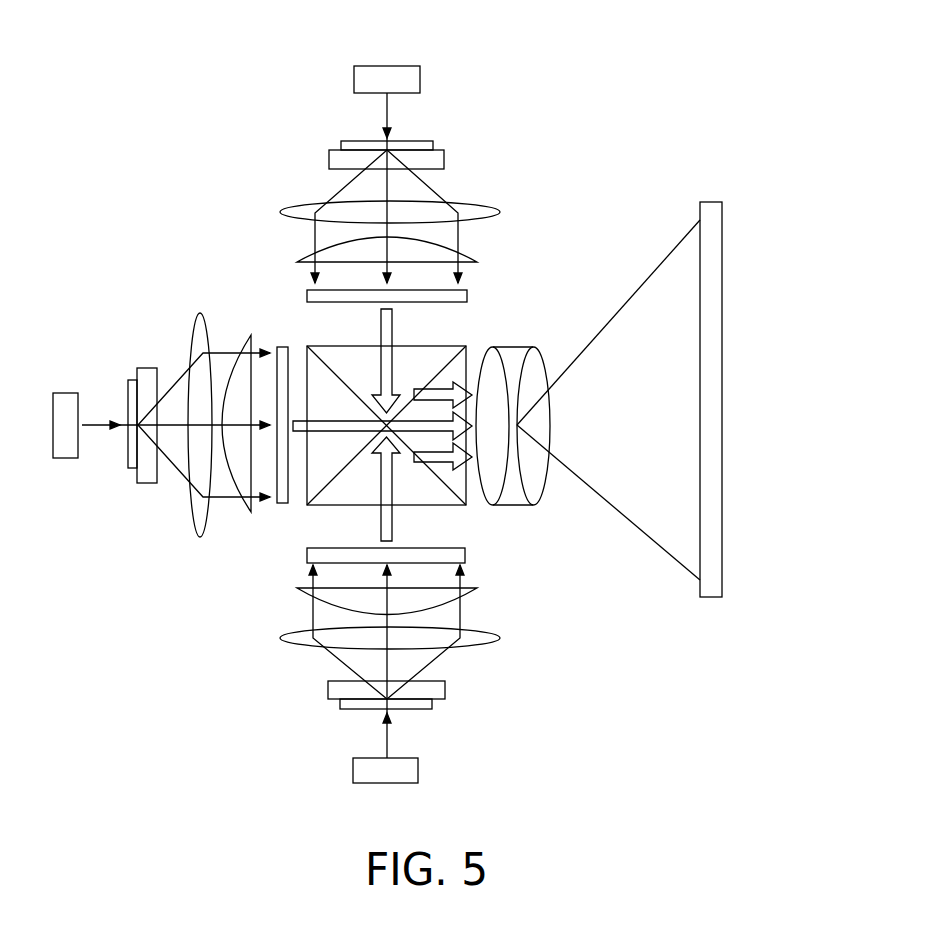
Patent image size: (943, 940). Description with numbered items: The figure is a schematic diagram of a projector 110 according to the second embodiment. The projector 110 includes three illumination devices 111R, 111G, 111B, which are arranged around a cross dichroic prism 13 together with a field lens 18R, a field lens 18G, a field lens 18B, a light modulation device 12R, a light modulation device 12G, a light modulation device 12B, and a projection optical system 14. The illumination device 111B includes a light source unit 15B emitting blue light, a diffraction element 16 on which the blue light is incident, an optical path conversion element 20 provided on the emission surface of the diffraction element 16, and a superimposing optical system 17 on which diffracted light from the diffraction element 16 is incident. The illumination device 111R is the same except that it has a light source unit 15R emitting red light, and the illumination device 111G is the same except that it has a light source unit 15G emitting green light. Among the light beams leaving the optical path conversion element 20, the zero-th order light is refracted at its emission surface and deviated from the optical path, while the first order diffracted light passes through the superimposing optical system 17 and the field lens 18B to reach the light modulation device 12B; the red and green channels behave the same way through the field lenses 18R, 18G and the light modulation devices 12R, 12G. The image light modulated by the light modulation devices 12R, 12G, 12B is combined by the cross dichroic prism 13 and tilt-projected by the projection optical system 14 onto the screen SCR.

The projector 110 is at (174, 75).
The illumination device 111R is at (550, 60).
The illumination device 111G is at (212, 594).
The illumination device 111B is at (538, 625).
The light source unit 15R is at (413, 79).
The light source unit 15G is at (65, 455).
The light source unit 15B is at (413, 770).
The diffraction element 16 is at (428, 147).
The optical path conversion element 20 is at (444, 162).
The superimposing optical system 17 is at (480, 210).
The field lens 18R is at (473, 250).
The field lens 18G is at (240, 347).
The field lens 18B is at (475, 597).
The light modulation device 12R is at (467, 295).
The light modulation device 12G is at (280, 503).
The light modulation device 12B is at (465, 555).
The cross dichroic prism 13 is at (313, 367).
The projection optical system 14 is at (532, 505).
The screen SCR is at (722, 212).